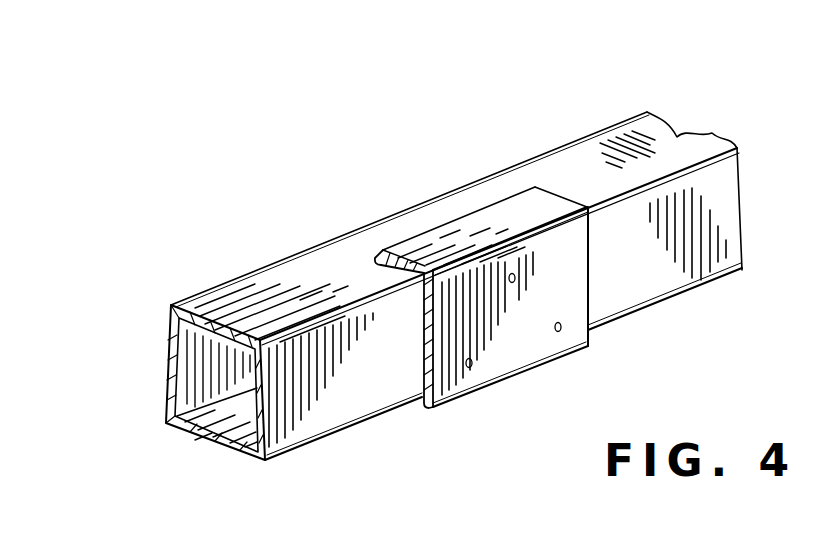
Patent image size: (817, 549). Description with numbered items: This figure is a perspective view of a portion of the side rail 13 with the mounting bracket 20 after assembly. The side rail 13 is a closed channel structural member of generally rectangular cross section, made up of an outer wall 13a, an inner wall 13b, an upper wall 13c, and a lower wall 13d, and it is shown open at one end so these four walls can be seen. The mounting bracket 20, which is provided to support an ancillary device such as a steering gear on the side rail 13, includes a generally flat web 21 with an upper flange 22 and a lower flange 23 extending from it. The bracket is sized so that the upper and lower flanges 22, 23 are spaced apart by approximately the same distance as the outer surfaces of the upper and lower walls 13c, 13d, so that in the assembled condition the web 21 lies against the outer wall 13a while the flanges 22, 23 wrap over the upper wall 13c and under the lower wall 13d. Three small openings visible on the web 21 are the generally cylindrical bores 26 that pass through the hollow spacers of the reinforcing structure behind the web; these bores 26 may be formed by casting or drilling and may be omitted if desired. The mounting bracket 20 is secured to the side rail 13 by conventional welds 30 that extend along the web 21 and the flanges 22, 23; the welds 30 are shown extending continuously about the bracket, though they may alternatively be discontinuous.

The side rail 13 is at (412, 299).
The outer wall 13a is at (285, 415).
The inner wall 13b is at (195, 362).
The upper wall 13c is at (236, 312).
The lower wall 13d is at (227, 427).
The mounting bracket 20 is at (546, 315).
The web 21 is at (570, 297).
The upper flange 22 is at (463, 235).
The lower flange 23 is at (420, 409).
The bore 26 is at (512, 283).
The weld 30 is at (425, 358).